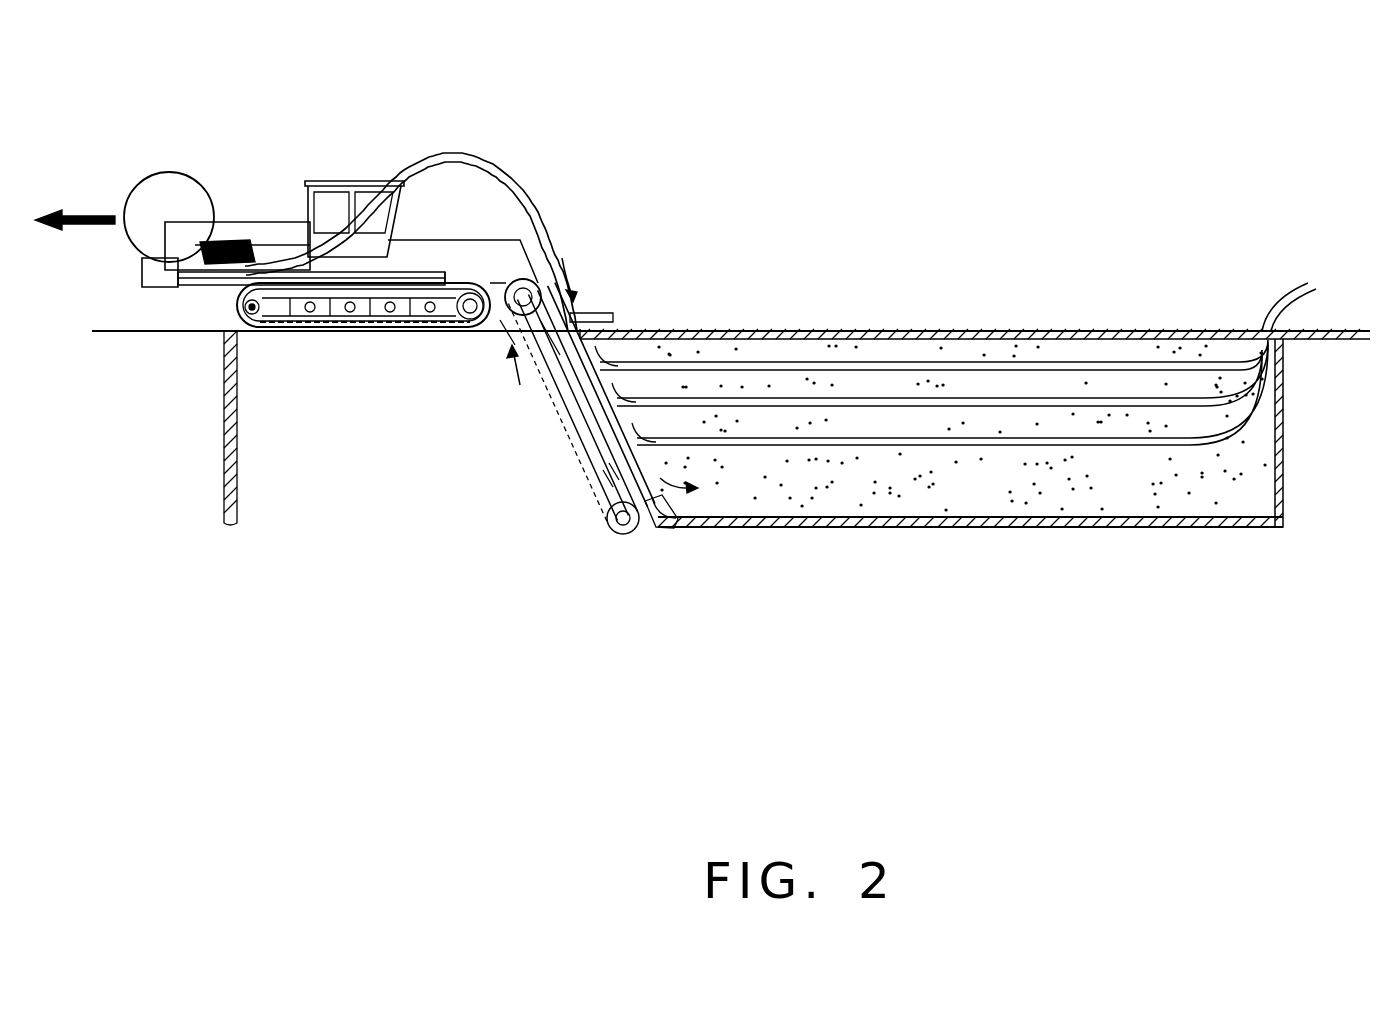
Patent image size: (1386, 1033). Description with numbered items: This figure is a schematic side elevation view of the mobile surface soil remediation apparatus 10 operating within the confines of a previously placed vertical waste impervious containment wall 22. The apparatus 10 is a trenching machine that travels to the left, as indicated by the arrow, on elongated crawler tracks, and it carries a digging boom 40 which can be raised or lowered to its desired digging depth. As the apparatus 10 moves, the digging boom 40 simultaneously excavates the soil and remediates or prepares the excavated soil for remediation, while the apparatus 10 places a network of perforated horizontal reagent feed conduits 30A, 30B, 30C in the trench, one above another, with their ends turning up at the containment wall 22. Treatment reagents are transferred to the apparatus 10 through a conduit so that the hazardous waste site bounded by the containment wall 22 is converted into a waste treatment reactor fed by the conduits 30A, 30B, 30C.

The surface soil remediation apparatus 10 is at (387, 109).
The waste impervious containment wall 22 is at (224, 442).
The perforated horizontal reagent feed conduit 30A is at (918, 445).
The perforated horizontal reagent feed conduit 30B is at (988, 405).
The perforated horizontal reagent feed conduit 30C is at (1030, 368).
The digging boom 40 is at (556, 416).